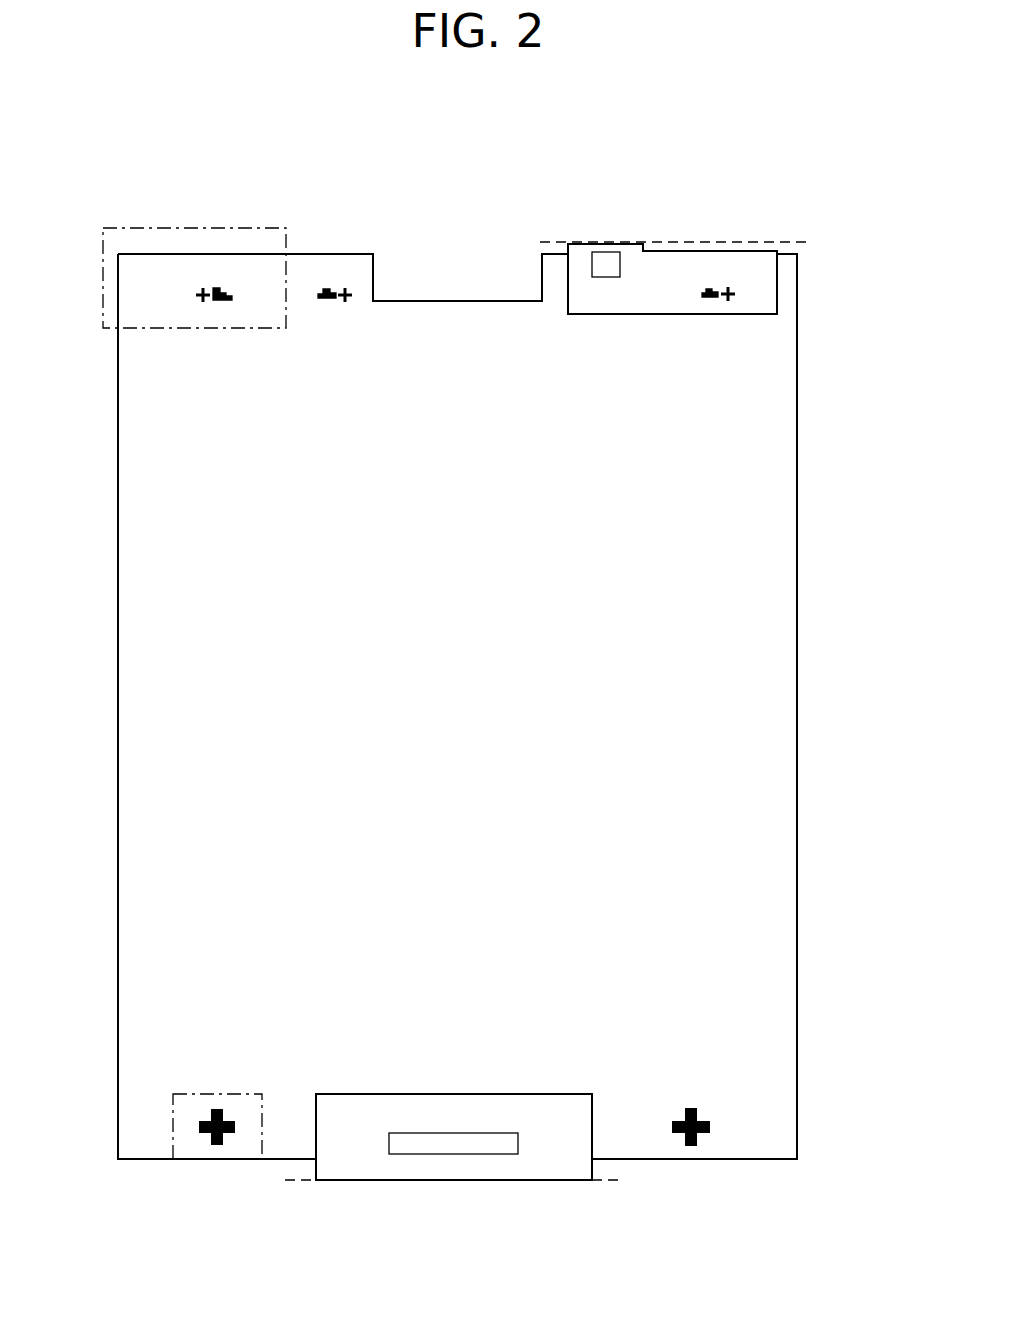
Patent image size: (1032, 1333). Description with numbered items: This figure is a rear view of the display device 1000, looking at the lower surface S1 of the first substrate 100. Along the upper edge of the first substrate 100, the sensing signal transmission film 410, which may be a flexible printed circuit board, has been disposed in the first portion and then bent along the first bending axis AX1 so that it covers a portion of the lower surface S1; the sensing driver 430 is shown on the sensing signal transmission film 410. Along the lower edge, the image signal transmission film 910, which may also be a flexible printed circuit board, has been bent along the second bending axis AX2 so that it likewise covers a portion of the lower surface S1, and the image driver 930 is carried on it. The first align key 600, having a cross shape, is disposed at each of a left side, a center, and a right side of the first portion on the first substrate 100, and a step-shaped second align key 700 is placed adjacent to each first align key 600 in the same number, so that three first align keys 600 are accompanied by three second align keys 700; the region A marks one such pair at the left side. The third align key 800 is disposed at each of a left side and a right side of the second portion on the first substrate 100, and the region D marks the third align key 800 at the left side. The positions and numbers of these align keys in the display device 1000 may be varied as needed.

The display device 1000 is at (795, 198).
The first substrate 100 is at (797, 613).
The lower surface S1 is at (752, 826).
The sensing signal transmission film 410 is at (777, 281).
The sensing driver 430 is at (604, 252).
The first bending axis AX1 is at (652, 243).
The region A is at (193, 228).
The first align key 600 is at (203, 300).
The second align key 700 is at (226, 301).
The region D is at (173, 1112).
The third align key 800 is at (207, 1130).
The second bending axis AX2 is at (432, 1182).
The image signal transmission film 910 is at (552, 1181).
The image driver 930 is at (455, 1155).